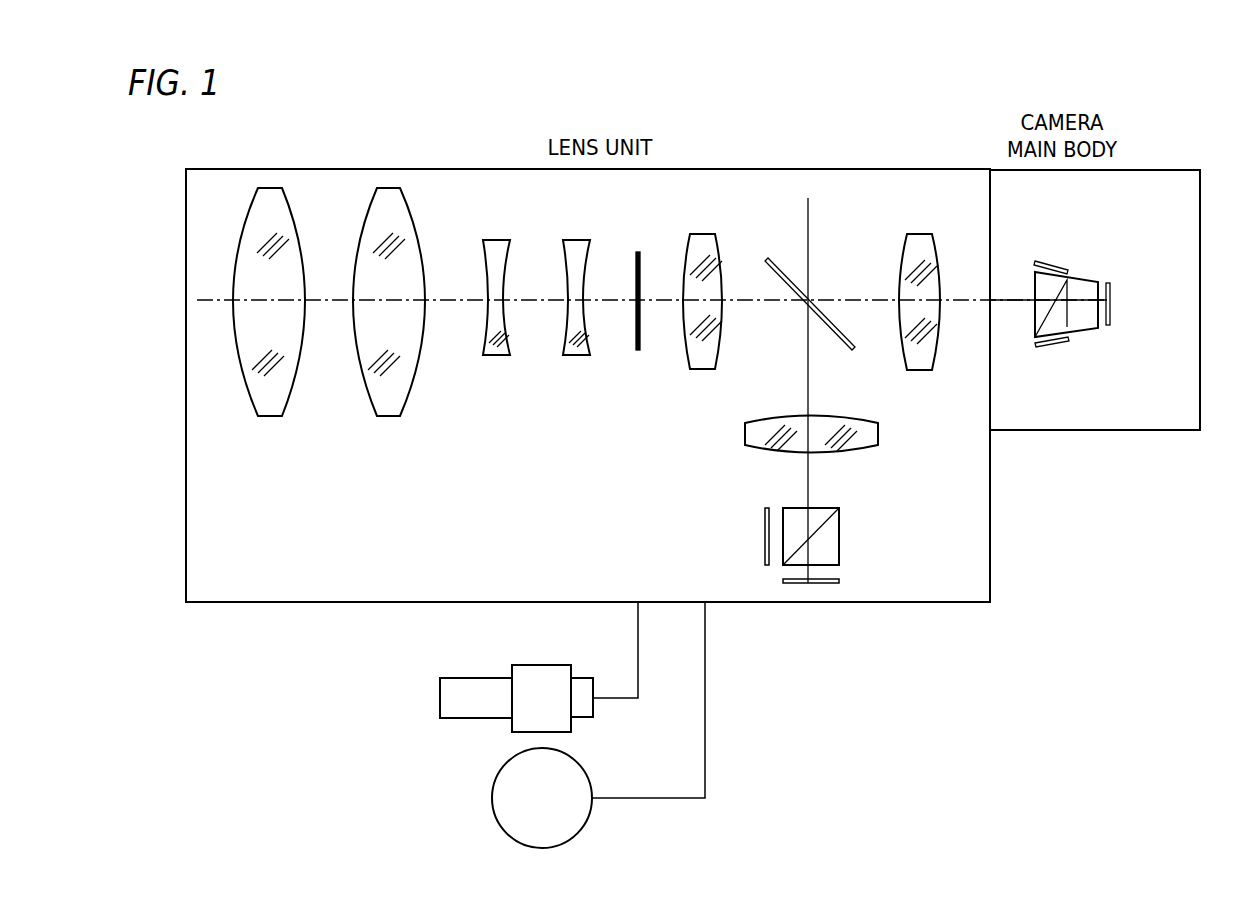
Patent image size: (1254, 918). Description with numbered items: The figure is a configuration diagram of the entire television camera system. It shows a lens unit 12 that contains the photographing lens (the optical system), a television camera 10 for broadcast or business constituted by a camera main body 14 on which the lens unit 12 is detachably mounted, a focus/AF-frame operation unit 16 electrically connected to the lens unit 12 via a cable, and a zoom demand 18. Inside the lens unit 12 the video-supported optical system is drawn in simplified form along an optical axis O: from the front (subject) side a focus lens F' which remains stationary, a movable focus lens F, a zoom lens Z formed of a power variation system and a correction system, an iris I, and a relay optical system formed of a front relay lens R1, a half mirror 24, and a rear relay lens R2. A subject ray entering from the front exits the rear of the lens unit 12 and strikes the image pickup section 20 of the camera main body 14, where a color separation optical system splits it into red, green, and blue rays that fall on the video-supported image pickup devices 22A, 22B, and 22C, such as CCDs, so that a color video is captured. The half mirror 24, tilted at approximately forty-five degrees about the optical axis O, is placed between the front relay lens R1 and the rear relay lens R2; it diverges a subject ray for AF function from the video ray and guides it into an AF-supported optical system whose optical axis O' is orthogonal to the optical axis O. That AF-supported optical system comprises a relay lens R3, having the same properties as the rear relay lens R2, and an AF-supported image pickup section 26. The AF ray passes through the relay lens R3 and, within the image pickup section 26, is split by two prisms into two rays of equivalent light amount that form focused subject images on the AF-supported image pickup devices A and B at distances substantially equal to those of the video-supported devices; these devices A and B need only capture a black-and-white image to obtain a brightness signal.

The television camera 10 is at (1190, 137).
The lens unit 12 is at (873, 169).
The camera main body 14 is at (1158, 170).
The focus/AF-frame operation unit 16 is at (494, 812).
The zoom demand 18 is at (458, 718).
The image pickup section 20 is at (1036, 256).
The video-supported image pickup device 22A is at (1112, 307).
The video-supported image pickup device 22B is at (1052, 350).
The video-supported image pickup device 22C is at (1052, 262).
The half mirror 24 is at (785, 268).
The AF-supported image pickup section 26 is at (855, 497).
The front relay lens R1 is at (702, 232).
The rear relay lens R2 is at (920, 232).
The relay lens R3 is at (879, 432).
The focus lens F is at (389, 343).
The focus lens F' is at (269, 343).
The zoom lens Z is at (480, 372).
The iris I is at (641, 338).
The optical axis O is at (652, 249).
The optical axis O' is at (755, 476).
The AF-supported image pickup device A is at (832, 584).
The AF-supported image pickup device B is at (762, 522).